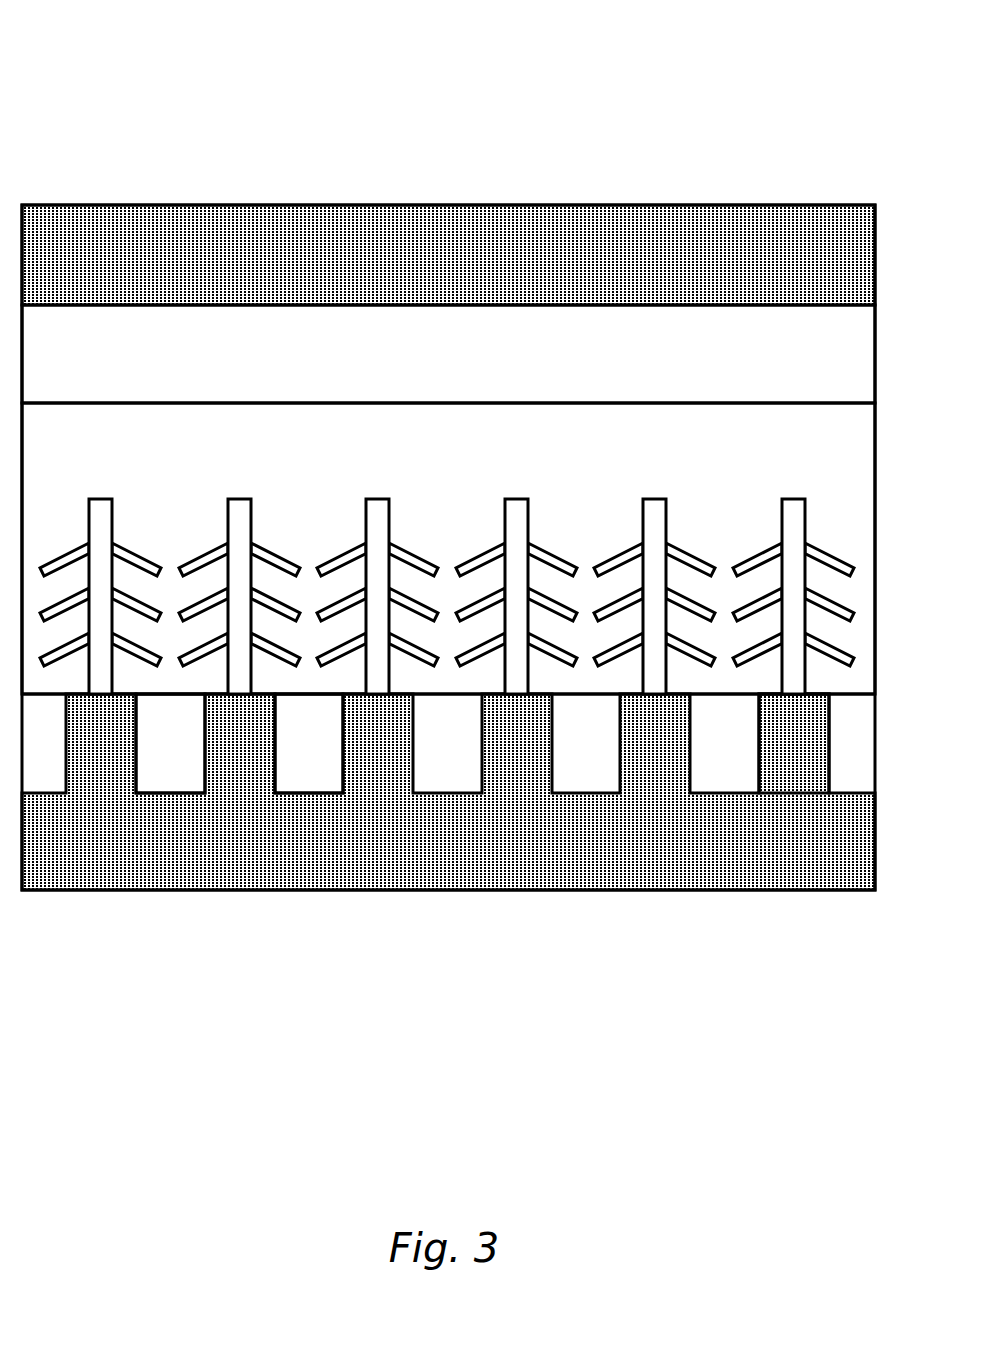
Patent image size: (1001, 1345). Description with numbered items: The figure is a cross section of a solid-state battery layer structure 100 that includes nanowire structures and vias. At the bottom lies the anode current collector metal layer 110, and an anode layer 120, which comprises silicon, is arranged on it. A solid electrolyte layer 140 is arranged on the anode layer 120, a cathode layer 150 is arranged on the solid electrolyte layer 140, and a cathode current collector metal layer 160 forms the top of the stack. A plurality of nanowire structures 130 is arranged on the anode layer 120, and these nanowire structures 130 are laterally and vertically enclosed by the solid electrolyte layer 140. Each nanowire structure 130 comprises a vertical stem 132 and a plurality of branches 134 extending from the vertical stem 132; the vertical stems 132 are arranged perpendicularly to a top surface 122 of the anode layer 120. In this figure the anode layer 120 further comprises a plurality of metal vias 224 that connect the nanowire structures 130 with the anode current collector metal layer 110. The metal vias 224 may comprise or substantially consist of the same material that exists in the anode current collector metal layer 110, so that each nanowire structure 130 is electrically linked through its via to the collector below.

The solid-state battery layer structure 100 is at (160, 153).
The anode current collector metal layer 110 is at (484, 863).
The anode layer 120 is at (173, 769).
The top surface 122 is at (317, 694).
The nanowire structures 130 is at (447, 511).
The vertical stem 132 is at (377, 498).
The branches 134 is at (543, 545).
The solid electrolyte layer 140 is at (483, 472).
The cathode layer 150 is at (483, 376).
The cathode current collector metal layer 160 is at (483, 279).
The metal vias 224 is at (780, 763).